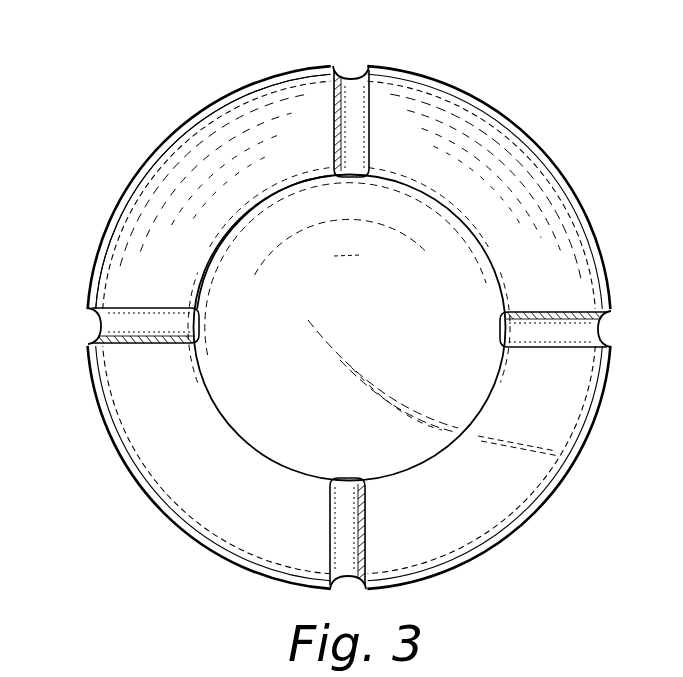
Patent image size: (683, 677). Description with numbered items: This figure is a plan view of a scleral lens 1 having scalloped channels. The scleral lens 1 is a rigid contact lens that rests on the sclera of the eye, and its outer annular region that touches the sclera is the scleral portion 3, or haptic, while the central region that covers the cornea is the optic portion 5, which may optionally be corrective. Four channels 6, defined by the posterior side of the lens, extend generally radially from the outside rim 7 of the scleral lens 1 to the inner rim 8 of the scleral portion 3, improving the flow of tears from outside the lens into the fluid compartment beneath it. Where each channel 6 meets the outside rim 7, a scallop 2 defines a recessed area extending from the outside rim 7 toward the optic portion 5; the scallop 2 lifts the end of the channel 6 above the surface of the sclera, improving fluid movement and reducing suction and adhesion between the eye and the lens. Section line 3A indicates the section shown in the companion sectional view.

The scleral lens 1 is at (430, 68).
The scallop 2 is at (342, 70).
The scleral portion 3 is at (455, 123).
The section line 3A- 3A is at (553, 286).
The optic portion 5 is at (440, 228).
The channel 6 is at (353, 95).
The outside rim 7 is at (249, 86).
The inner rim 8 is at (252, 203).